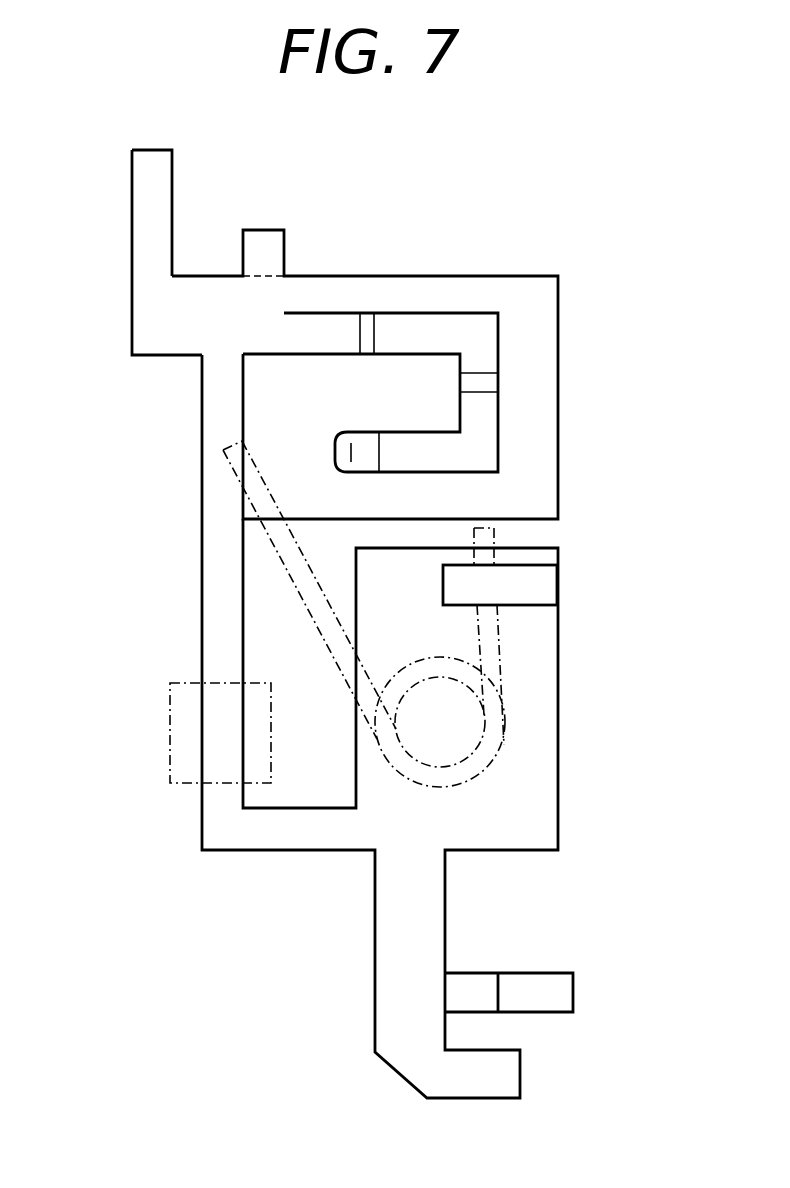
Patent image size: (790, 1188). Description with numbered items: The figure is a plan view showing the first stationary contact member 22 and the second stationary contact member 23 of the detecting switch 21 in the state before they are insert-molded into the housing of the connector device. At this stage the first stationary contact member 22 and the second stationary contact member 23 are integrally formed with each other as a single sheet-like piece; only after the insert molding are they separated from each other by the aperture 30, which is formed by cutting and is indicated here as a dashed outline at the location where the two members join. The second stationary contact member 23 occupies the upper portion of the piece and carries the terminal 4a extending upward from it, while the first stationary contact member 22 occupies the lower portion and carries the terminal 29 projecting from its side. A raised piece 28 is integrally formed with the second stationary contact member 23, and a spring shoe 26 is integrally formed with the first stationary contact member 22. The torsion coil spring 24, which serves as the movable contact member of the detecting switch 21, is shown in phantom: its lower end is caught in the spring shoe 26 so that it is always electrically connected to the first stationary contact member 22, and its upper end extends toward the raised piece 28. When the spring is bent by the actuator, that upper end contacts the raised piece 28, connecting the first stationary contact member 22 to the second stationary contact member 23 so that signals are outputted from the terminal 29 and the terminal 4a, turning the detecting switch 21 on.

The terminal 4a is at (147, 207).
The detecting switch 21 is at (614, 587).
The first stationary contact member 22 is at (540, 807).
The second stationary contact member 23 is at (543, 398).
The torsion coil spring 24 is at (235, 463).
The spring shoe 26 is at (540, 587).
The raised piece 28 is at (428, 466).
The terminal 29 is at (563, 992).
The aperture 30 is at (182, 740).